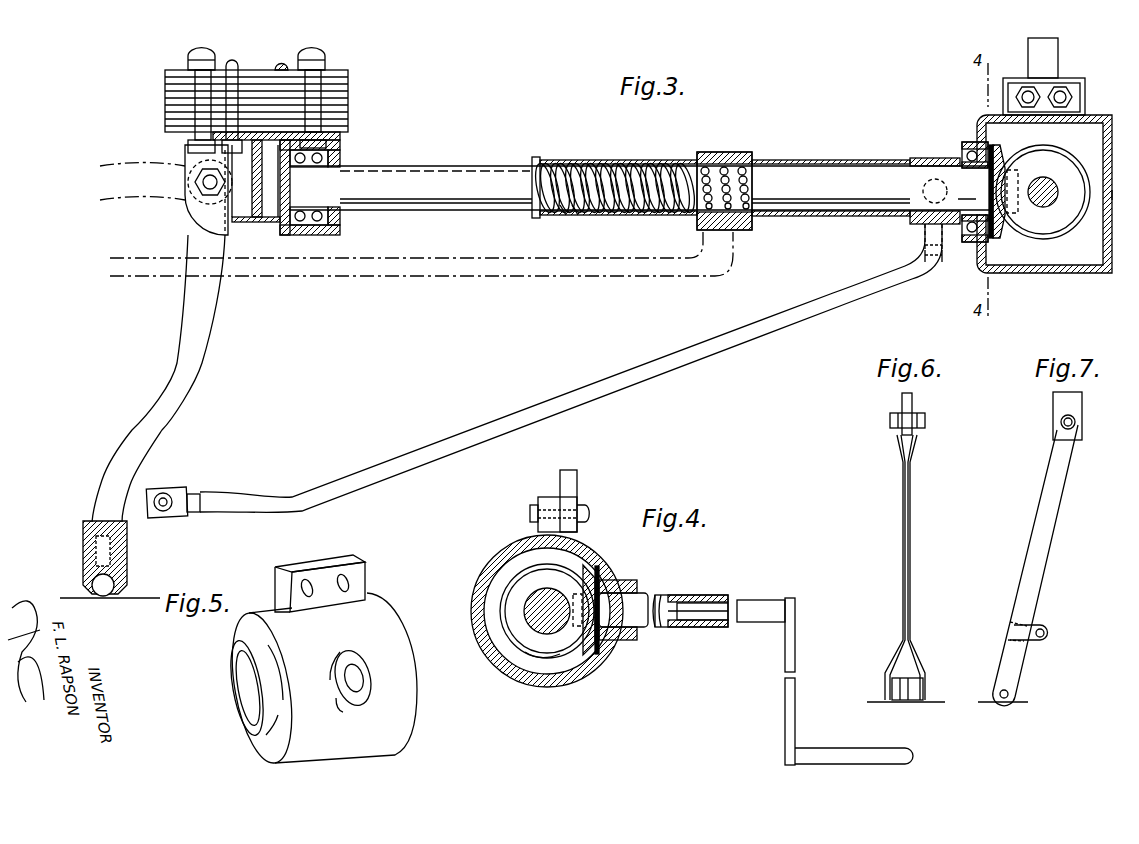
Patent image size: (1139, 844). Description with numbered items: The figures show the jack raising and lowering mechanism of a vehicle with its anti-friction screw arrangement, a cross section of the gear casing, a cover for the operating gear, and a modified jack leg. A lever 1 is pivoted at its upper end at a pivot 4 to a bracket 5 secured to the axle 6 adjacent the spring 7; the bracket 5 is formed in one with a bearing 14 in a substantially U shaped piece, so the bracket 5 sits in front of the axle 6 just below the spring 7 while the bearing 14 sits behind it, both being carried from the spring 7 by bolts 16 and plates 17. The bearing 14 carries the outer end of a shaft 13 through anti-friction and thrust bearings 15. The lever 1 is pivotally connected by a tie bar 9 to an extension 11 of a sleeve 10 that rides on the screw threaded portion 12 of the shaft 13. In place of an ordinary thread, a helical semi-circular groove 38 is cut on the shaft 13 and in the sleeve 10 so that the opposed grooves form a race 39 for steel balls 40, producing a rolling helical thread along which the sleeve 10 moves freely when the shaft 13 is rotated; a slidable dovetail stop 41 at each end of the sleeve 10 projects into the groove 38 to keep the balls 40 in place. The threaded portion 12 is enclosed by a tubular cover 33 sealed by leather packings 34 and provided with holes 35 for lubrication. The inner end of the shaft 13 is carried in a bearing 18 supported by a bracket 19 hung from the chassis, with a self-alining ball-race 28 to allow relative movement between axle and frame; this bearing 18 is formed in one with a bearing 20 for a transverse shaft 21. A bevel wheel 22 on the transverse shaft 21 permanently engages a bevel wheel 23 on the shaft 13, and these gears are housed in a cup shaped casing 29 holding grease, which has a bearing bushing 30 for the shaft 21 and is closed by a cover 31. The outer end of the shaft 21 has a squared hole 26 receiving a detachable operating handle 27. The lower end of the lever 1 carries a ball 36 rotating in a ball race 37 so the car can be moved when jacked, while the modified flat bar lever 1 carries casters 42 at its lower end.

In FIG. 3, the lever 1 is at (125, 190).
In FIG. 6, the lever 1 is at (911, 544).
In FIG. 7, the lever 1 is at (1036, 521).
In FIG. 3, the pivot 4 is at (202, 187).
In FIG. 6, the pivot 4 is at (926, 421).
In FIG. 7, the pivot 4 is at (1076, 425).
In FIG. 3, the bracket 5 is at (196, 222).
In FIG. 6, the bracket 5 is at (902, 402).
In FIG. 7, the bracket 5 is at (1053, 405).
In FIG. 3, the axle 6 is at (258, 224).
In FIG. 3, the spring 7 is at (346, 94).
In FIG. 3, the tie bar 9 is at (411, 259).
In FIG. 3, the sleeve 10 is at (752, 160).
In FIG. 3, the extension 11 is at (918, 226).
In FIG. 3, the screw threaded portion 12 is at (590, 166).
In FIG. 3, the shaft 13 is at (865, 150).
In FIG. 4, the shaft 13 is at (523, 605).
In FIG. 3, the bearing 14 is at (306, 235).
In FIG. 3, the anti-friction and thrust bearings 15 is at (330, 185).
In FIG. 3, the bolts 16 is at (200, 108).
In FIG. 3, the plates 17 is at (300, 60).
In FIG. 3, the bearing 18 is at (943, 258).
In FIG. 5, the bearing 18 is at (236, 686).
In FIG. 3, the bracket 19 is at (1058, 60).
In FIG. 4, the bracket 19 is at (575, 486).
In FIG. 5, the bearing 20 is at (367, 680).
In FIG. 4, the bearing 20 is at (622, 580).
In FIG. 3, the transverse shaft 21 is at (1047, 185).
In FIG. 4, the transverse shaft 21 is at (623, 610).
In FIG. 3, the bevel wheel 22 is at (1059, 232).
In FIG. 4, the bevel wheel 22 is at (586, 572).
In FIG. 3, the bevel wheel 23 is at (1002, 233).
In FIG. 4, the bevel wheel 23 is at (550, 654).
In FIG. 4, the squared hole 26 is at (708, 620).
In FIG. 4, the operating handle 27 is at (791, 660).
In FIG. 3, the self-alining ball-race 28 is at (963, 154).
In FIG. 3, the casing 29 is at (1048, 273).
In FIG. 5, the casing 29 is at (418, 628).
In FIG. 4, the casing 29 is at (488, 566).
In FIG. 4, the bearing bushing 30 is at (640, 630).
In FIG. 3, the cover 31 is at (1112, 197).
In FIG. 3, the tubular cover 33 is at (670, 162).
In FIG. 3, the packings 34 is at (534, 217).
In FIG. 3, the holes 35 is at (620, 216).
In FIG. 3, the ball 36 is at (103, 596).
In FIG. 3, the ball race 37 is at (125, 578).
In FIG. 3, the groove 38 is at (580, 216).
In FIG. 3, the race 39 is at (731, 152).
In FIG. 3, the balls 40 is at (758, 180).
In FIG. 3, the stop 41 is at (712, 152).
In FIG. 6, the casters 42 is at (922, 685).